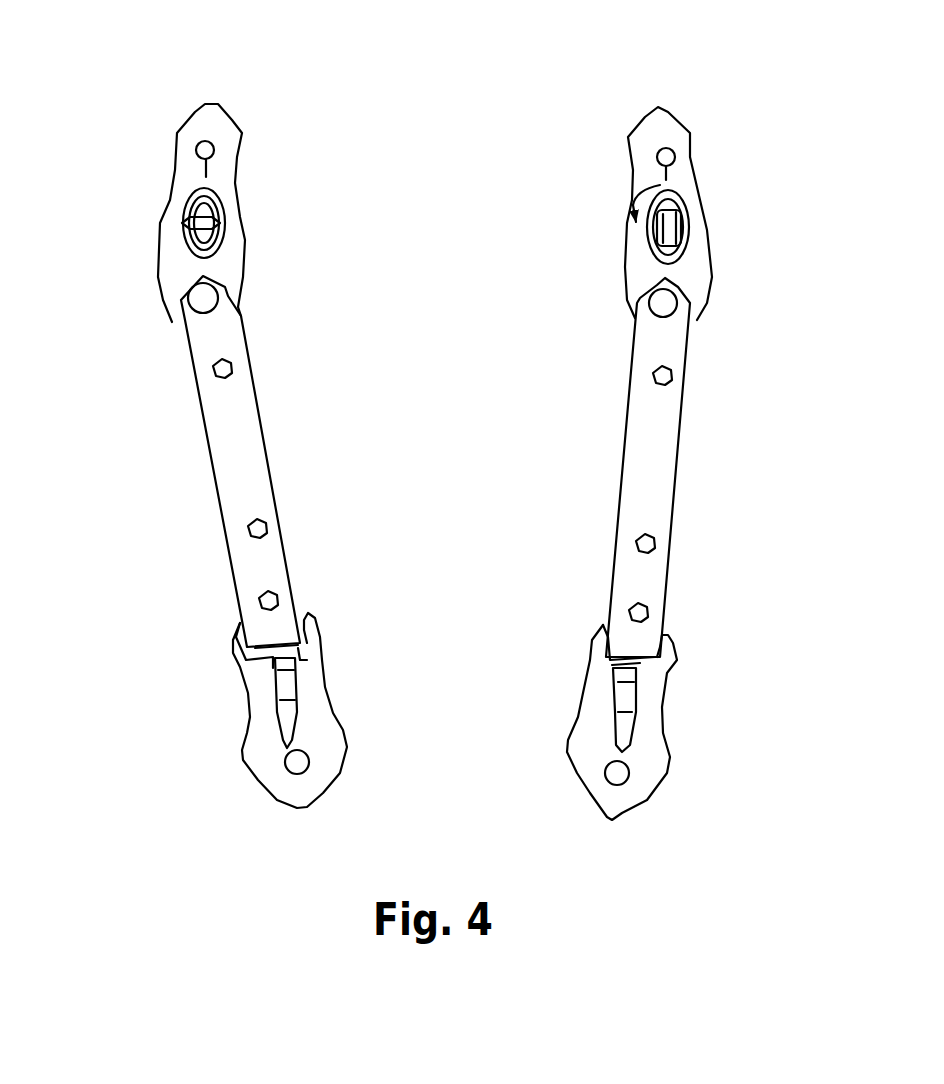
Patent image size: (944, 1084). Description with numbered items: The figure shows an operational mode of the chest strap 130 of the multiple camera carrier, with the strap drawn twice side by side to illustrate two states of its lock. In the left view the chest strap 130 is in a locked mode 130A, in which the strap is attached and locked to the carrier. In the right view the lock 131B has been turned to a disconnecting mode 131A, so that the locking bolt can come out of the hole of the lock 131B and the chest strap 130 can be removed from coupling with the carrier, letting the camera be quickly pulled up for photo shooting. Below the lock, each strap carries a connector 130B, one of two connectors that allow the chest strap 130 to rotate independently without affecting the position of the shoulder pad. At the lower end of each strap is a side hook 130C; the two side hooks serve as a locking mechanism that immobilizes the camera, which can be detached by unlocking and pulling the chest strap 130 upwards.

The chest strap 130 is at (815, 31).
The locked mode 130A is at (177, 217).
The connector 130B is at (195, 308).
The side hook 130C is at (273, 748).
The disconnecting mode 131A is at (687, 227).
The lock 131B is at (230, 248).